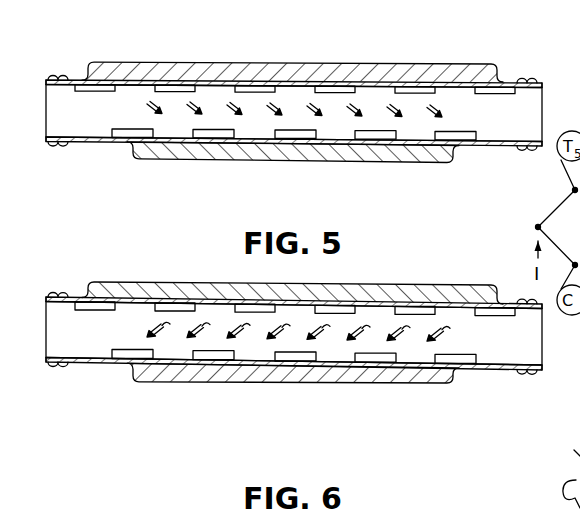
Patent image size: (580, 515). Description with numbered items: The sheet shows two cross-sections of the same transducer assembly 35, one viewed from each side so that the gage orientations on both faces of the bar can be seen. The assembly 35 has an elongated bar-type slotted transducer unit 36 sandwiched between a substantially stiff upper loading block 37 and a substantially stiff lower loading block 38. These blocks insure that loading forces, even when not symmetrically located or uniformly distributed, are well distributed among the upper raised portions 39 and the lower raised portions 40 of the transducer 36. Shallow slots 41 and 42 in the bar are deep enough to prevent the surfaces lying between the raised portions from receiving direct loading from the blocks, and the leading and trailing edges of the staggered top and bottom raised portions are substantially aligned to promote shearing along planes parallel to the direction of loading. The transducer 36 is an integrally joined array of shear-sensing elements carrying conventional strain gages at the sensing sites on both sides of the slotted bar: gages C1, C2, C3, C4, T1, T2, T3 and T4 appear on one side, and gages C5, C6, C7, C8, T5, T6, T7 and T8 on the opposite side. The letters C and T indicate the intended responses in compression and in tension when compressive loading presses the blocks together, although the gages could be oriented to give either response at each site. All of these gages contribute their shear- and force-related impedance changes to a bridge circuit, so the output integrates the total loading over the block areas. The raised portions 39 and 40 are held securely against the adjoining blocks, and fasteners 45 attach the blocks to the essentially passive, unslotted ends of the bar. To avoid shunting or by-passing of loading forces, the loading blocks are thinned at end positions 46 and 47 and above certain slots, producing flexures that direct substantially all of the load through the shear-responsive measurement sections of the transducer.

In FIG. 5, the transducer assembly 35 is at (441, 38).
In FIG. 6, the transducer assembly 35 is at (120, 254).
In FIG. 5, the bar-type slotted transducer unit 36 is at (130, 105).
In FIG. 6, the bar-type slotted transducer unit 36 is at (463, 328).
In FIG. 5, the upper loading block 37 is at (170, 72).
In FIG. 6, the upper loading block 37 is at (150, 284).
In FIG. 5, the lower loading block 38 is at (153, 153).
In FIG. 6, the lower loading block 38 is at (446, 383).
In FIG. 5, the upper raised portions 39 is at (371, 92).
In FIG. 6, the upper raised portions 39 is at (372, 311).
In FIG. 5, the lower raised portions 40 is at (306, 166).
In FIG. 6, the lower raised portions 40 is at (286, 391).
In FIG. 5, the slots 41 is at (257, 88).
In FIG. 6, the slots 41 is at (248, 302).
In FIG. 5, the slots 42 is at (226, 139).
In FIG. 6, the slots 42 is at (371, 362).
In FIG. 5, the fasteners 45 is at (56, 145).
In FIG. 6, the fasteners 45 is at (57, 368).
In FIG. 5, the end position of reduced block thickness 46 is at (86, 72).
In FIG. 6, the end position of reduced block thickness 46 is at (529, 276).
In FIG. 5, the end position of reduced block thickness 47 is at (128, 150).
In FIG. 6, the end position of reduced block thickness 47 is at (474, 376).
In FIG. 5, the strain gage T1 is at (201, 112).
In FIG. 5, the strain gage T2 is at (281, 114).
In FIG. 5, the strain gage T3 is at (361, 114).
In FIG. 5, the strain gage T4 is at (441, 116).
In FIG. 6, the strain gage T5 is at (388, 340).
In FIG. 6, the strain gage T6 is at (308, 338).
In FIG. 6, the strain gage T7 is at (228, 337).
In FIG. 6, the strain gage T8 is at (148, 336).
In FIG. 5, the strain gage C1 is at (161, 112).
In FIG. 5, the strain gage C2 is at (241, 113).
In FIG. 5, the strain gage C3 is at (321, 114).
In FIG. 5, the strain gage C4 is at (401, 115).
In FIG. 6, the strain gage C5 is at (428, 340).
In FIG. 6, the strain gage C6 is at (348, 339).
In FIG. 6, the strain gage C7 is at (268, 338).
In FIG. 6, the strain gage C8 is at (188, 337).